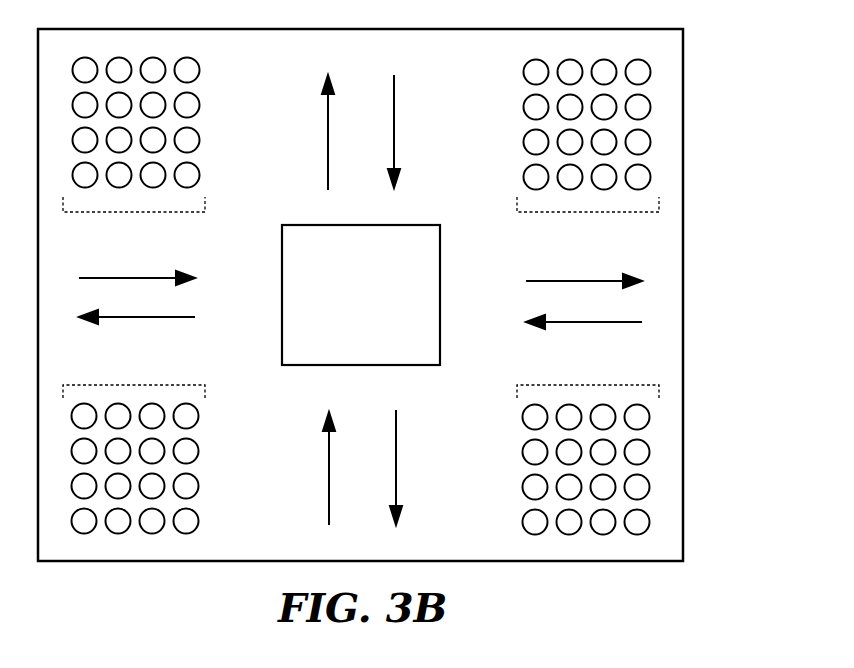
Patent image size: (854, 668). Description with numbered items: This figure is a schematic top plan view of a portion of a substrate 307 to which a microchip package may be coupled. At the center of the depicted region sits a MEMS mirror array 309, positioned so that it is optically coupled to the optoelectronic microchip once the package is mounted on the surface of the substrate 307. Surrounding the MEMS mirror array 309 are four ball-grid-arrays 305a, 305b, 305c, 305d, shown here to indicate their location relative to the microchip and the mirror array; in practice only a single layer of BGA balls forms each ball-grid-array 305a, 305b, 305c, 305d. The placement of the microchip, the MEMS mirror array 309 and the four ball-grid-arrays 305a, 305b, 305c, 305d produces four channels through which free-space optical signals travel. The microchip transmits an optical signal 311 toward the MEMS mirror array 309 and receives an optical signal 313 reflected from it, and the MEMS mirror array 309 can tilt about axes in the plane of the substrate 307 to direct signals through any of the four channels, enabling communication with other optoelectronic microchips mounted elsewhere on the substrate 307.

The ball-grid-array 305a is at (135, 213).
The ball-grid-array 305b is at (592, 213).
The ball-grid-array 305c is at (590, 385).
The ball-grid-array 305d is at (132, 385).
The substrate 307 is at (684, 297).
The MEMS mirror array 309 is at (361, 295).
The optical signal 311 is at (327, 127).
The optical signal 313 is at (396, 121).